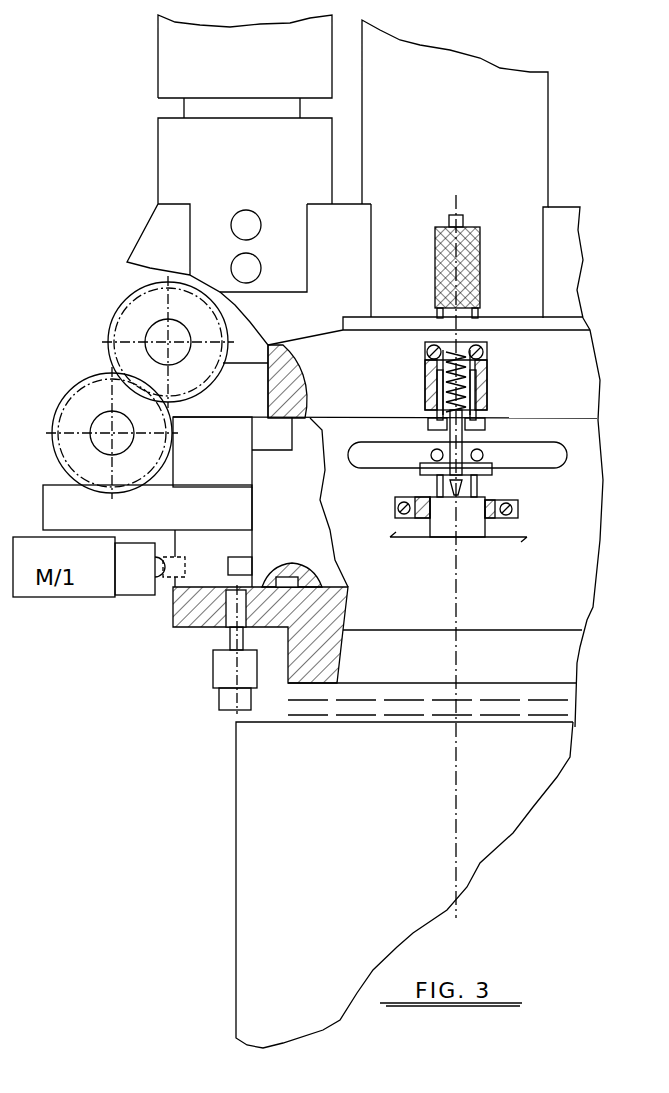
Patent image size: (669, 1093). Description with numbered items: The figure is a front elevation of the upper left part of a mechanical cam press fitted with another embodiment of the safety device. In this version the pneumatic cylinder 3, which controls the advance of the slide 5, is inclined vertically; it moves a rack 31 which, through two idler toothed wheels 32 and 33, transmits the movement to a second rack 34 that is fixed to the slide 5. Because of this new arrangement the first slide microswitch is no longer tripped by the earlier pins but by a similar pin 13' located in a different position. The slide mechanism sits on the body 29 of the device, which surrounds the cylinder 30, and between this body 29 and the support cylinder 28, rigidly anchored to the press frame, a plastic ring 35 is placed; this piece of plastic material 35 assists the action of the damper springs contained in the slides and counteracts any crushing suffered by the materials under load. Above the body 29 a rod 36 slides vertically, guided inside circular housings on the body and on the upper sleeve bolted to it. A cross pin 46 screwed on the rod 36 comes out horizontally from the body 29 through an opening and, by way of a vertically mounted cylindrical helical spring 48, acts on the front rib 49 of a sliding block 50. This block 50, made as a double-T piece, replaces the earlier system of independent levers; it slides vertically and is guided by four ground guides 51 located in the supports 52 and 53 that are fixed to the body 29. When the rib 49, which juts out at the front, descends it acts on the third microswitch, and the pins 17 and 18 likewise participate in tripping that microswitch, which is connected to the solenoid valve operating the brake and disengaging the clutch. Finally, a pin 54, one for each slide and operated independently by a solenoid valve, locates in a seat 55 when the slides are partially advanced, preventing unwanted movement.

The pneumatic cylinder 3 is at (172, 157).
The slide 5 is at (318, 492).
The pin 13' is at (207, 558).
The pin 17 is at (432, 453).
The pin 18 is at (480, 455).
The support cylinder 28 is at (245, 813).
The body 29 is at (585, 385).
The cylinder 30 is at (520, 140).
The rack 31 is at (246, 352).
The idler toothed wheel 32 is at (138, 308).
The idler toothed wheel 33 is at (92, 398).
The rack 34 is at (80, 492).
The plastic ring 35 is at (548, 710).
The rod 36 is at (461, 217).
The cross pin 46 is at (477, 275).
The cylindrical helical spring 48 is at (438, 392).
The front rib 49 is at (456, 466).
The sliding block 50 is at (478, 470).
The ground guide 51 is at (484, 404).
The support 52 is at (462, 350).
The support 53 is at (512, 517).
The pin 54 is at (232, 610).
The seat 55 is at (290, 580).